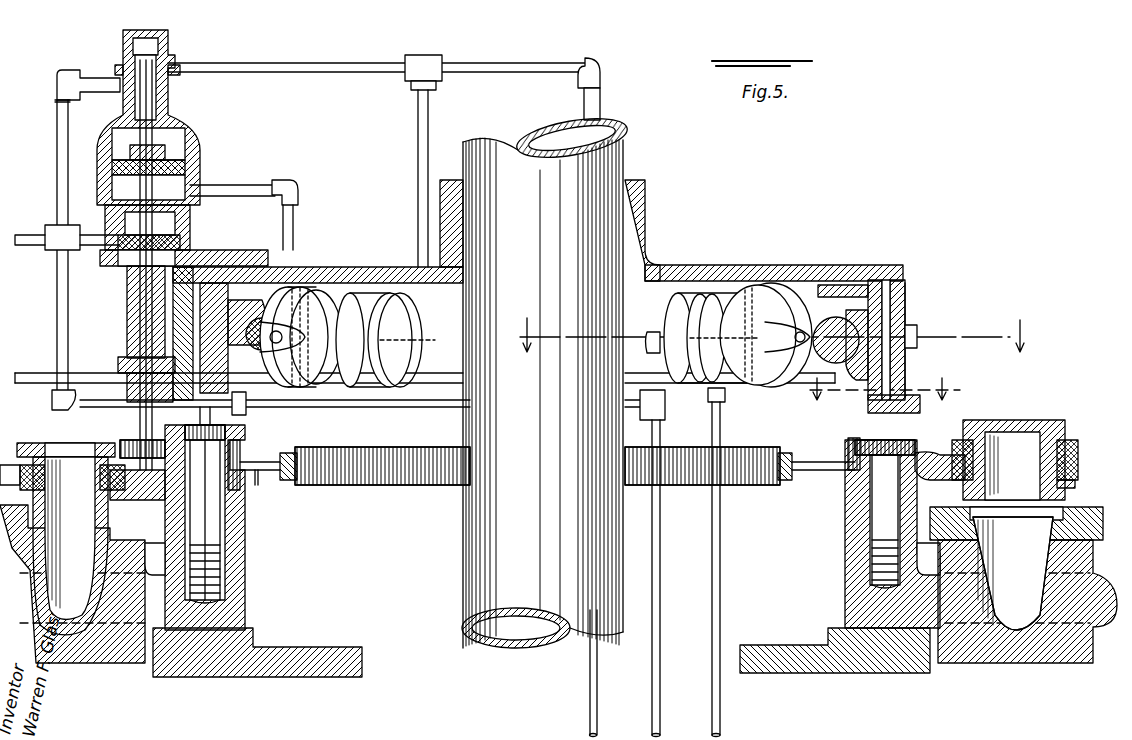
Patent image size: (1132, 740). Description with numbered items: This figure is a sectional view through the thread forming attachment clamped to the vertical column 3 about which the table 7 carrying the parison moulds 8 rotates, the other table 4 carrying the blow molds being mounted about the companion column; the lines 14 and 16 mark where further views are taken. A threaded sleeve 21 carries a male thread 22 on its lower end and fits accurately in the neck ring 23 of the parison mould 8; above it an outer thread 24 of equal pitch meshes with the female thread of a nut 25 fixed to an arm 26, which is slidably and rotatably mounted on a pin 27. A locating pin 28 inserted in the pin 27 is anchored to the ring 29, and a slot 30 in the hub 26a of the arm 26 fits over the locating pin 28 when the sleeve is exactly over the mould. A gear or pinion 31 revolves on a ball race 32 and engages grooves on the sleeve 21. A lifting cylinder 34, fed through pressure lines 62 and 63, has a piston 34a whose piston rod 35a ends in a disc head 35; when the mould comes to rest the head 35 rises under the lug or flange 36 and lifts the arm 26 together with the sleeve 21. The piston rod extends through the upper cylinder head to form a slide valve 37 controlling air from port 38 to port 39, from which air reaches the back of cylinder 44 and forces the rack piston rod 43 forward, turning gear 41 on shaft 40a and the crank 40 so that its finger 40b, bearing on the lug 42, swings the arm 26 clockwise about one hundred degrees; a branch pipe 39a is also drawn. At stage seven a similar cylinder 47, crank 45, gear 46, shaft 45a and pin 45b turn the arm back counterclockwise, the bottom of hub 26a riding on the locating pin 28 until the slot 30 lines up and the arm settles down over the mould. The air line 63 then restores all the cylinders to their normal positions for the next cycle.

The vertical column 3 is at (580, 236).
The table 4 is at (880, 300).
The table 7 is at (325, 665).
The parison mould 8 is at (80, 650).
The section line 14- 14 is at (778, 333).
The section line 16- 16 is at (884, 386).
The threaded sleeve 21 is at (1055, 407).
The male thread 22 is at (90, 490).
The neck ring 23 is at (1050, 526).
The thread 24 is at (1080, 444).
The nut 25 is at (1078, 466).
The arm 26 is at (245, 520).
The hub 26a is at (185, 492).
The pin 27 is at (872, 535).
The locating pin 28 is at (330, 488).
The ring 29 is at (350, 485).
The slot 30 is at (245, 488).
The gear or pinion 31 is at (12, 465).
The ball race 32 is at (30, 468).
The lifting cylinder 34 is at (110, 212).
The piston 34a is at (185, 232).
The disc head 35 is at (128, 440).
The piston rod 35a is at (140, 305).
The lug or flange 36 is at (537, 434).
The slide valve 37 is at (185, 100).
The port 38 is at (125, 72).
The port 39 is at (168, 63).
The branch pipe 39a is at (418, 146).
The crank 40 is at (262, 392).
The shaft 40a is at (283, 212).
The finger or pin 40b is at (240, 412).
The gear 41 is at (160, 340).
The lug 42 is at (225, 420).
The rack piston rod 43 is at (260, 300).
The cylinder 44 is at (350, 300).
The crank 45 is at (880, 380).
The shaft 45a is at (908, 290).
The pin 45b is at (922, 405).
The gear 46 is at (912, 325).
The cylinder 47 is at (752, 300).
The pressure line 62 is at (50, 233).
The air line 63 is at (57, 345).